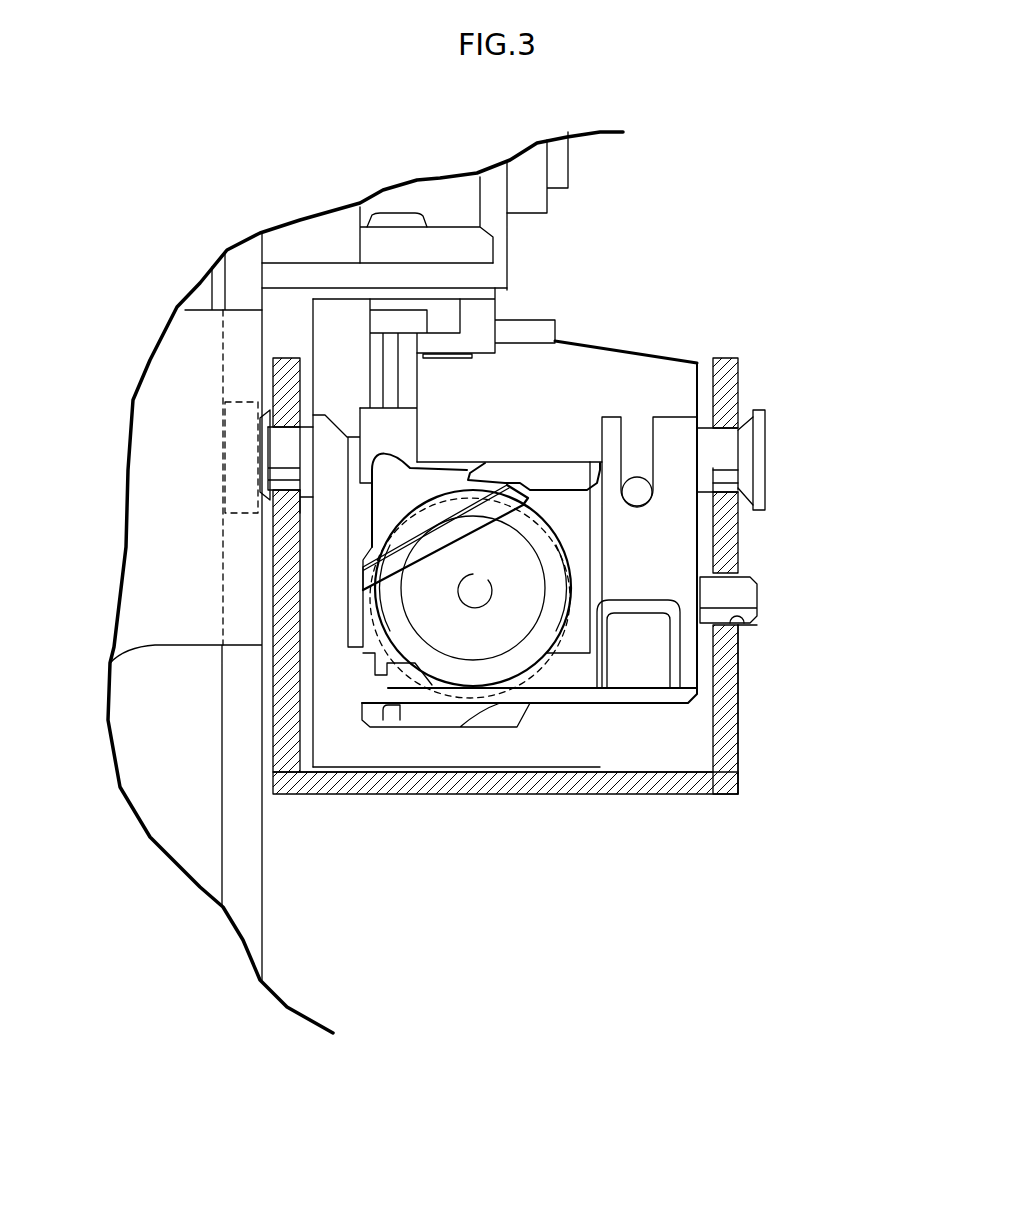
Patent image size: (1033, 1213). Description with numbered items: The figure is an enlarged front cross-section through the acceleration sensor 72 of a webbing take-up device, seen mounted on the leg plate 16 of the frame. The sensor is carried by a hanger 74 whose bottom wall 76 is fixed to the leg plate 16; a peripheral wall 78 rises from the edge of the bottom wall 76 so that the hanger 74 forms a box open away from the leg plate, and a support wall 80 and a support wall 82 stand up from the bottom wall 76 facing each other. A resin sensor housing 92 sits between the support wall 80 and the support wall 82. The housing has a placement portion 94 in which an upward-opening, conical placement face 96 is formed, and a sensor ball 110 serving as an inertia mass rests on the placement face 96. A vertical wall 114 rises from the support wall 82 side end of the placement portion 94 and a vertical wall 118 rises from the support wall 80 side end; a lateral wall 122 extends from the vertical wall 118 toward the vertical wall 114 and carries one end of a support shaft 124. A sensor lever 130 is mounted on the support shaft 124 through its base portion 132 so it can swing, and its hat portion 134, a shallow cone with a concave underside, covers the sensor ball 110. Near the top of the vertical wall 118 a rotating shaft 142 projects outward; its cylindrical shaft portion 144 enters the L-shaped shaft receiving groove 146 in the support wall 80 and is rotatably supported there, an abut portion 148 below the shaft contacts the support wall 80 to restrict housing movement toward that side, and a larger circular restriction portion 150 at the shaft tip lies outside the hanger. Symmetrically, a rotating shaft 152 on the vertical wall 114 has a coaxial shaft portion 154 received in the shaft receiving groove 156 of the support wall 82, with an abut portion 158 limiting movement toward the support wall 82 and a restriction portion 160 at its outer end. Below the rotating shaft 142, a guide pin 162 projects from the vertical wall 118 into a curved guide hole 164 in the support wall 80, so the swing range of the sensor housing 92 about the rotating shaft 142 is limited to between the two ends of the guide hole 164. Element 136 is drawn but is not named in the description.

The leg plate 16 is at (263, 937).
The acceleration sensor 72 is at (712, 287).
The hanger 74 is at (365, 797).
The bottom wall 76 is at (453, 793).
The peripheral wall 78 is at (742, 707).
The support wall 80 is at (740, 730).
The support wall 82 is at (273, 678).
The sensor housing 92 is at (565, 735).
The placement portion 94 is at (498, 727).
The placement face 96 is at (582, 578).
The sensor ball 110 is at (590, 590).
The vertical wall 114 is at (283, 585).
The vertical wall 118 is at (760, 593).
The lateral wall 122 is at (730, 543).
The support shaft 124 is at (633, 497).
The sensor lever 130 is at (528, 447).
The base portion 132 is at (568, 475).
The hat portion 134 is at (437, 543).
The lever 136 is at (390, 475).
The rotating shaft 142 is at (775, 402).
The shaft portion 144 is at (740, 457).
The shaft receiving groove 146 is at (732, 430).
The abut portion 148 is at (740, 497).
The restriction portion 150 is at (767, 472).
The rotating shaft 152 is at (307, 413).
The shaft portion 154 is at (283, 462).
The shaft receiving groove 156 is at (282, 430).
The abut portion 158 is at (302, 510).
The restriction portion 160 is at (245, 398).
The guide pin 162 is at (760, 628).
The guide hole 164 is at (760, 650).